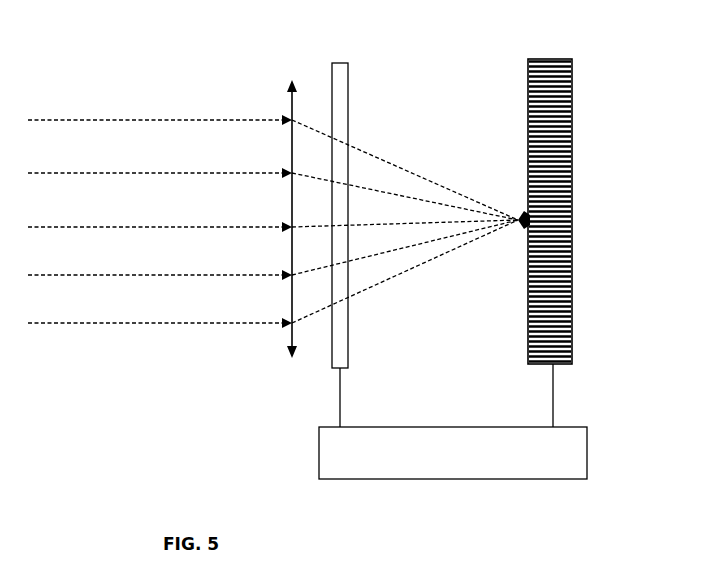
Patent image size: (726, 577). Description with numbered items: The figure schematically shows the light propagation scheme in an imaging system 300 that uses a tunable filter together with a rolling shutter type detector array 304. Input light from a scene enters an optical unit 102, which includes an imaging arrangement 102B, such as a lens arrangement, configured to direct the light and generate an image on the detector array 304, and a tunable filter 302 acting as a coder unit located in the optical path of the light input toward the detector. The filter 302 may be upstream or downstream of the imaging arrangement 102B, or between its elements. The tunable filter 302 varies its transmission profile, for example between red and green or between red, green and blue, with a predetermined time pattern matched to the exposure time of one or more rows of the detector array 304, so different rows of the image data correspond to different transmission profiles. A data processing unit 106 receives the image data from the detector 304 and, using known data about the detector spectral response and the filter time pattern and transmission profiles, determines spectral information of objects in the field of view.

The optical unit 102 is at (243, 60).
The imaging arrangement 102B is at (347, 323).
The tunable filter 302 is at (290, 340).
The system 300 is at (605, 243).
The rolling shutter type detector array 304 is at (572, 258).
The data processing unit 106 is at (508, 480).